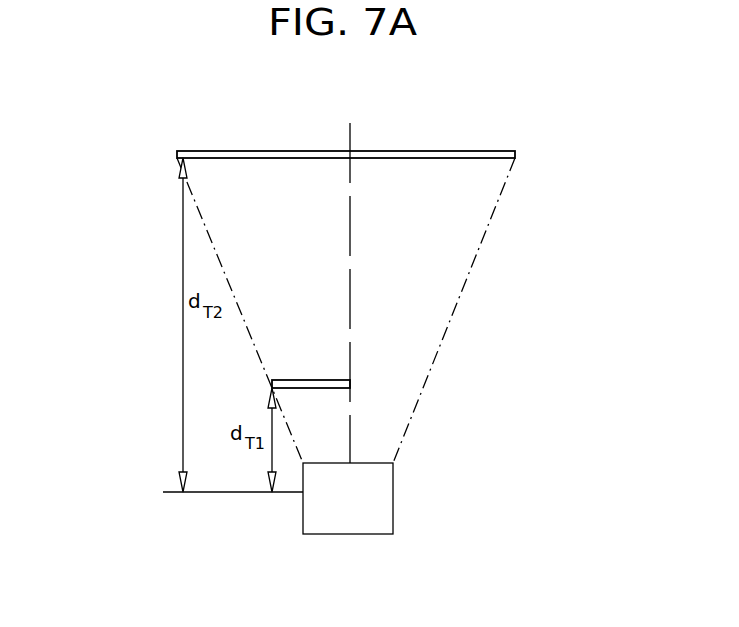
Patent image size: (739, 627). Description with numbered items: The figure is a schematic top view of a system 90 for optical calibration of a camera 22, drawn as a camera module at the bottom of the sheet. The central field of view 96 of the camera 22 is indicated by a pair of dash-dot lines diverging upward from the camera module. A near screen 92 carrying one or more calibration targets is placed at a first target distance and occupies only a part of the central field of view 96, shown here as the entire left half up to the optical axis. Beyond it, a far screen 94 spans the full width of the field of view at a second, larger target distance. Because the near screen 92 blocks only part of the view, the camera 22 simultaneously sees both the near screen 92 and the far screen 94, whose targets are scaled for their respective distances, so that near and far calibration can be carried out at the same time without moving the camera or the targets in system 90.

The system 90 is at (160, 146).
The far screen 94 is at (398, 151).
The near screen 92 is at (310, 380).
The central field of view 96 is at (418, 403).
The camera 22 is at (303, 516).